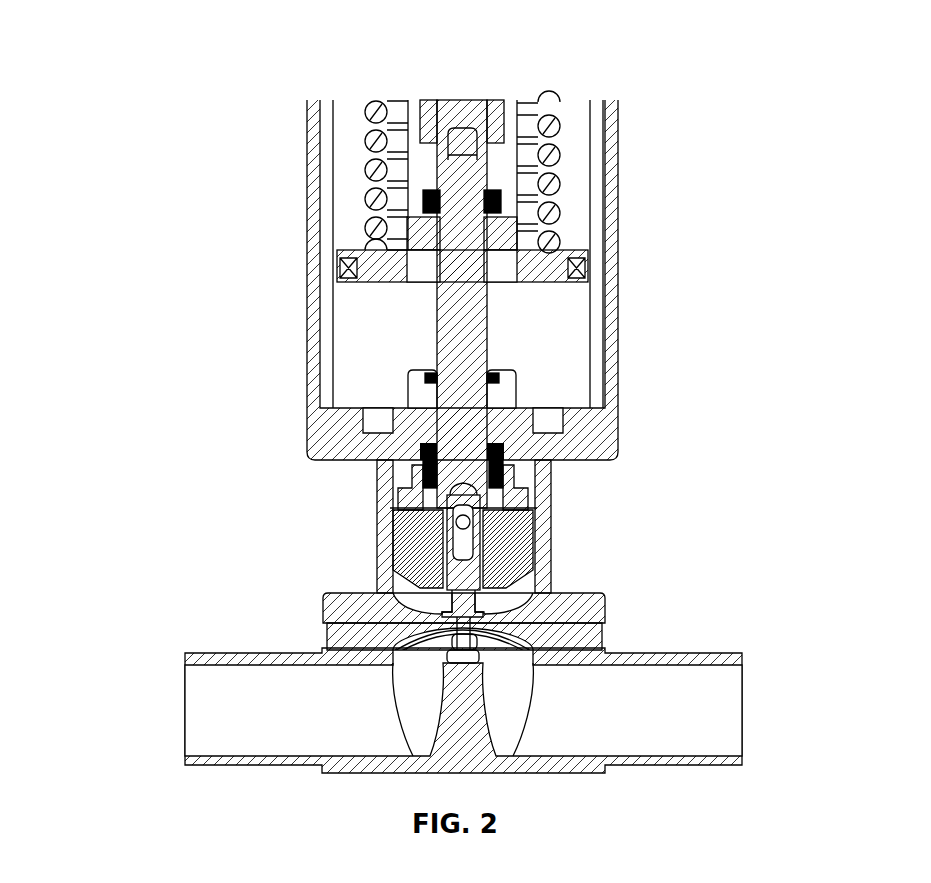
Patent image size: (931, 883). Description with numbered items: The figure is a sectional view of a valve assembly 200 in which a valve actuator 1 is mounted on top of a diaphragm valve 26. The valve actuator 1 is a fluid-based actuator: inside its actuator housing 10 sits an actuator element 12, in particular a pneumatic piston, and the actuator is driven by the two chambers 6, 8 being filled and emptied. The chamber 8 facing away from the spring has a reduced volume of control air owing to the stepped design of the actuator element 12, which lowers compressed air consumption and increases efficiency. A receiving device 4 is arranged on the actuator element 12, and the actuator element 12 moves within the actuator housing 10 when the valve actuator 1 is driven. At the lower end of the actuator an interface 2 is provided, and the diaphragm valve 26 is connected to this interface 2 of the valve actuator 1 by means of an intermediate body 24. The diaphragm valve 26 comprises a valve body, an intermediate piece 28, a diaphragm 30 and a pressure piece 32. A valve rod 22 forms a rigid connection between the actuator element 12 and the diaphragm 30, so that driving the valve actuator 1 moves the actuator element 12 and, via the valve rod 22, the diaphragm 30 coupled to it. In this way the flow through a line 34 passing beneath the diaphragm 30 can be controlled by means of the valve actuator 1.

The valve assembly 200 is at (207, 93).
The valve actuator 1 is at (650, 97).
The chamber 6 is at (313, 165).
The actuator housing 10 is at (310, 220).
The receiving device 4 is at (480, 185).
The actuator element 12 is at (520, 248).
The valve rod 22 is at (475, 322).
The chamber 8 is at (353, 343).
The interface 2 is at (618, 440).
The intermediate body 24 is at (380, 500).
The diaphragm valve 26 is at (337, 582).
The pressure piece 32 is at (520, 545).
The intermediate piece 28 is at (605, 600).
The diaphragm 30 is at (605, 637).
The line 34 is at (252, 697).